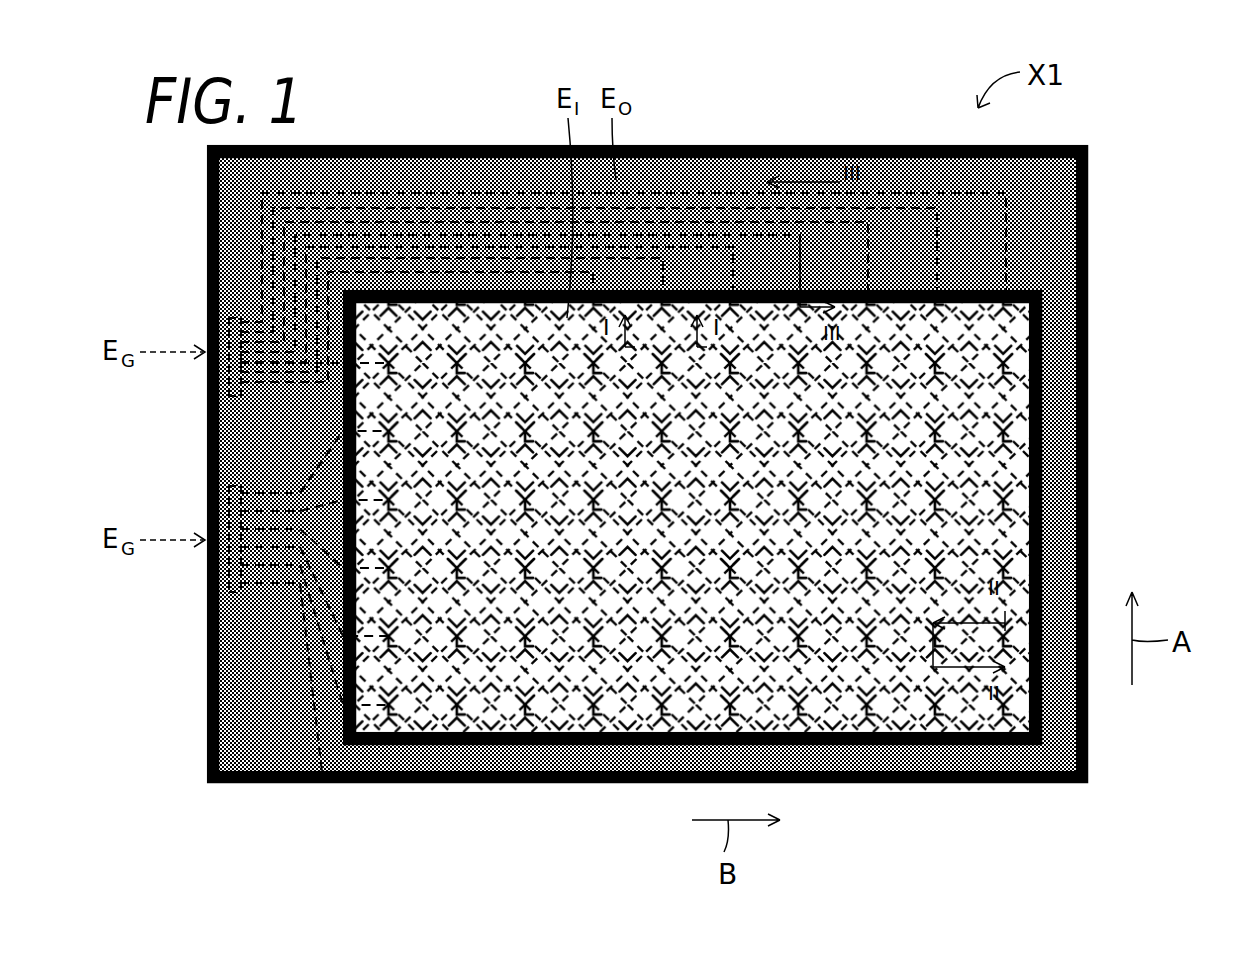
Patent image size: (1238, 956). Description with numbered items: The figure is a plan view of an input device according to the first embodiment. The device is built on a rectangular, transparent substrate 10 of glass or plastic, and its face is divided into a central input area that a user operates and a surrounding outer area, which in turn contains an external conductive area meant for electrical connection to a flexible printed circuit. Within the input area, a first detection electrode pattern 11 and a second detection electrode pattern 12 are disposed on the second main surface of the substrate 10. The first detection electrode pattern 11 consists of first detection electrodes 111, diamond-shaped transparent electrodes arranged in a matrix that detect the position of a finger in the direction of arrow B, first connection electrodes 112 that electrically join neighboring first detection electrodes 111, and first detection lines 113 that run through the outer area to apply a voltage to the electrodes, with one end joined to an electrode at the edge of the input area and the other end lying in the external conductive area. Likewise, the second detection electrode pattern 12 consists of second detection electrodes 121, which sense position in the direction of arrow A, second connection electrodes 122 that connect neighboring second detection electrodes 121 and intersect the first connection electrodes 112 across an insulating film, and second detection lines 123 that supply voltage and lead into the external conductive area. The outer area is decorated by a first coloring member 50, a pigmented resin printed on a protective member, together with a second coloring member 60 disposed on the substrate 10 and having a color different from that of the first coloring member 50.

The substrate 10 is at (209, 705).
The first detection electrode pattern 11 is at (1170, 270).
The first detection electrodes 111 is at (1005, 395).
The first connection electrodes 112 is at (1050, 440).
The first detection lines 113 is at (1090, 288).
The second detection electrode pattern 12 is at (488, 838).
The second detection electrodes 121 is at (462, 738).
The second connection electrodes 122 is at (401, 748).
The second detection lines 123 is at (327, 784).
The first coloring member 50 is at (245, 415).
The second coloring member 60 is at (209, 457).